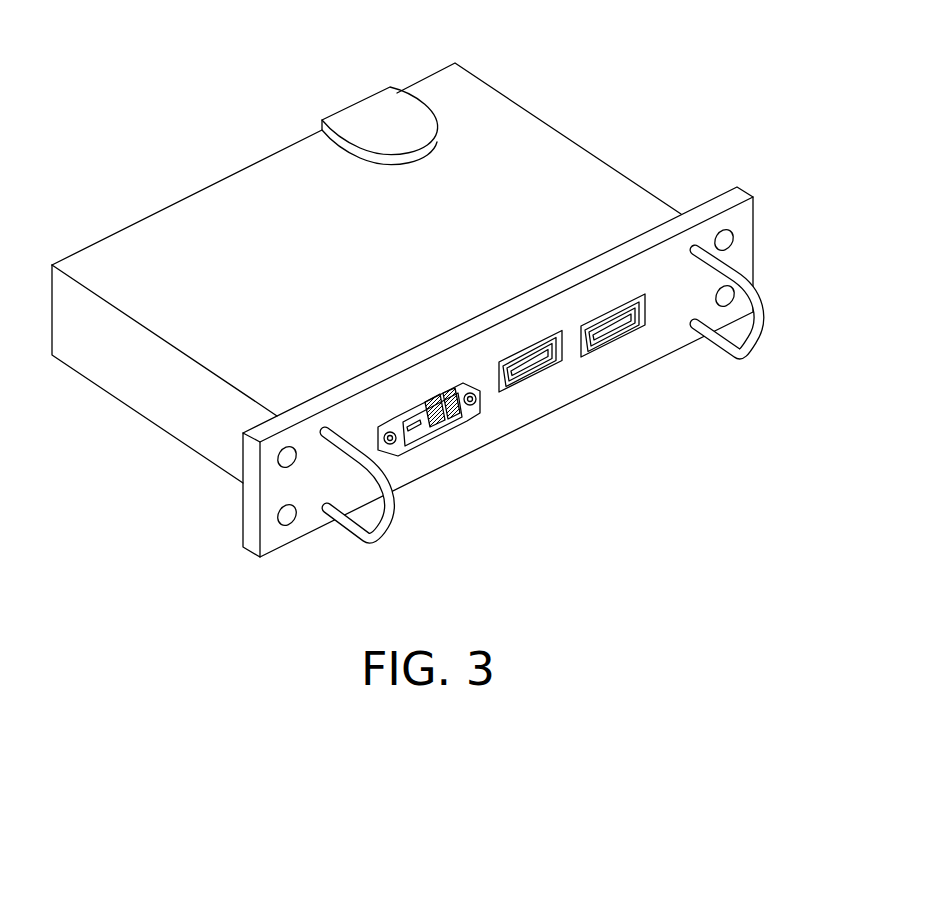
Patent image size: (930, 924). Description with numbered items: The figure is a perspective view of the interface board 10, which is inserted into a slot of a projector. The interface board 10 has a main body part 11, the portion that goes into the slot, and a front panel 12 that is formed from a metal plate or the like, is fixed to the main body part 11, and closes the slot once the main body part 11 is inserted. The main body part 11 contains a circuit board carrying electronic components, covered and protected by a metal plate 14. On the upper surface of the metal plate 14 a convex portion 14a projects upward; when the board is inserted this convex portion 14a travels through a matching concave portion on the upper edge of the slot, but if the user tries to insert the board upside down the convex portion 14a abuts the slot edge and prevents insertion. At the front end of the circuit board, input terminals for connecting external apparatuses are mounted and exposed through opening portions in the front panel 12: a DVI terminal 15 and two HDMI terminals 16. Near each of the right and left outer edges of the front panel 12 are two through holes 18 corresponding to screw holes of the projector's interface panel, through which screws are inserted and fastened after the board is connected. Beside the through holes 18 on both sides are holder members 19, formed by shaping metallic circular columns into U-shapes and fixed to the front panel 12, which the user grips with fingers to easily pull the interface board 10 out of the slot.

The interface board 10 is at (610, 68).
The main body part 11 is at (101, 415).
The front panel 12 is at (500, 422).
The metal plate 14 is at (137, 227).
The convex portion 14a is at (360, 108).
The DVI terminal 15 is at (438, 437).
The HDMI terminal 16 is at (547, 378).
The through hole 18 is at (276, 467).
The holder member 19 is at (383, 517).